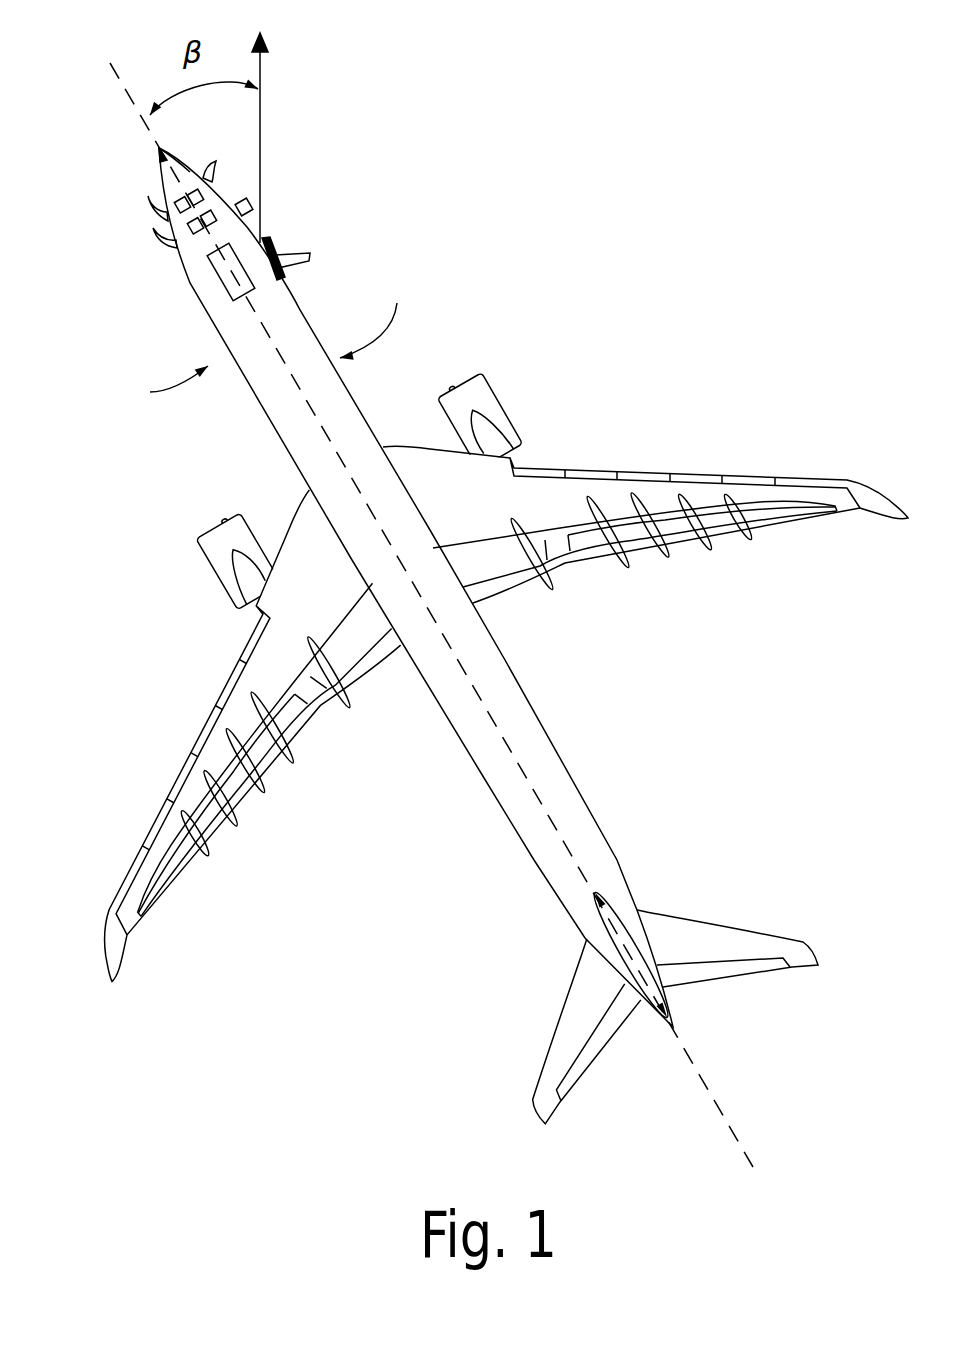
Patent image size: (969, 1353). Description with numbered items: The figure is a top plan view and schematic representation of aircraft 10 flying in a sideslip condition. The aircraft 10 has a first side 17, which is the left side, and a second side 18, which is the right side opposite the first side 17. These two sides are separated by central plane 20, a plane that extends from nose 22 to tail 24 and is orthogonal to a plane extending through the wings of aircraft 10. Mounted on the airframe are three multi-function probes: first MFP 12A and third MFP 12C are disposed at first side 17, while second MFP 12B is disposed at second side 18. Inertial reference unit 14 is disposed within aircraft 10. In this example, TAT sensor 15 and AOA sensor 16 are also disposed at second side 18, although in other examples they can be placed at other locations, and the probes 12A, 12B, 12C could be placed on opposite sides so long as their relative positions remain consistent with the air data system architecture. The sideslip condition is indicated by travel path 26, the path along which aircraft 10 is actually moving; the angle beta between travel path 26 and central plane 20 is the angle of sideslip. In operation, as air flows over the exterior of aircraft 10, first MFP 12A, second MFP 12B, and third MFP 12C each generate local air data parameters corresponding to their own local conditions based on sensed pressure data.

The aircraft 10 is at (472, 769).
The first multi-function probe 12A is at (148, 200).
The second multi-function probe 12B is at (215, 177).
The third multi-function probe 12C is at (153, 233).
The inertial reference unit 14 is at (217, 280).
The total air temperature sensor 15 is at (250, 203).
The angle of attack sensor 16 is at (313, 253).
The first side 17 is at (159, 385).
The second side 18 is at (373, 318).
The central plane 20 is at (323, 430).
The nose 22 is at (149, 152).
The tail 24 is at (652, 1022).
The travel path 26 is at (263, 67).